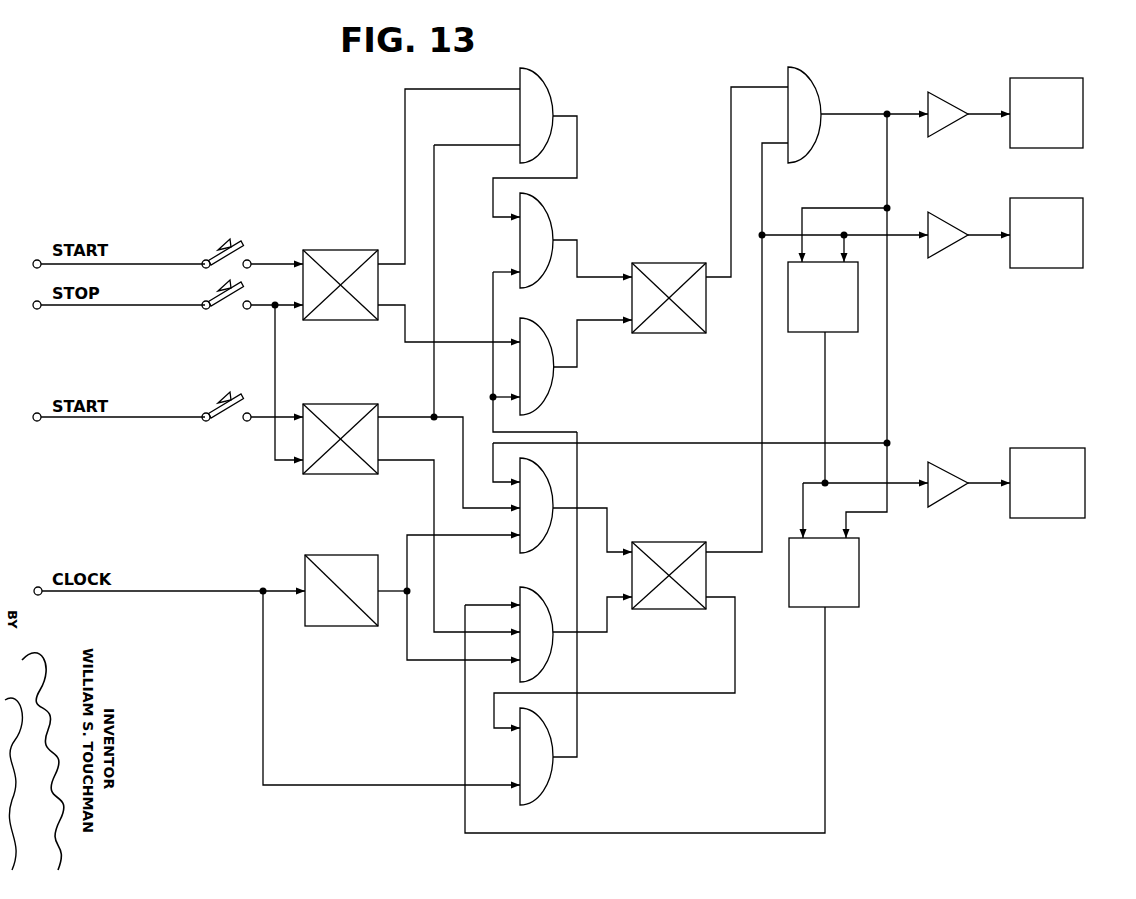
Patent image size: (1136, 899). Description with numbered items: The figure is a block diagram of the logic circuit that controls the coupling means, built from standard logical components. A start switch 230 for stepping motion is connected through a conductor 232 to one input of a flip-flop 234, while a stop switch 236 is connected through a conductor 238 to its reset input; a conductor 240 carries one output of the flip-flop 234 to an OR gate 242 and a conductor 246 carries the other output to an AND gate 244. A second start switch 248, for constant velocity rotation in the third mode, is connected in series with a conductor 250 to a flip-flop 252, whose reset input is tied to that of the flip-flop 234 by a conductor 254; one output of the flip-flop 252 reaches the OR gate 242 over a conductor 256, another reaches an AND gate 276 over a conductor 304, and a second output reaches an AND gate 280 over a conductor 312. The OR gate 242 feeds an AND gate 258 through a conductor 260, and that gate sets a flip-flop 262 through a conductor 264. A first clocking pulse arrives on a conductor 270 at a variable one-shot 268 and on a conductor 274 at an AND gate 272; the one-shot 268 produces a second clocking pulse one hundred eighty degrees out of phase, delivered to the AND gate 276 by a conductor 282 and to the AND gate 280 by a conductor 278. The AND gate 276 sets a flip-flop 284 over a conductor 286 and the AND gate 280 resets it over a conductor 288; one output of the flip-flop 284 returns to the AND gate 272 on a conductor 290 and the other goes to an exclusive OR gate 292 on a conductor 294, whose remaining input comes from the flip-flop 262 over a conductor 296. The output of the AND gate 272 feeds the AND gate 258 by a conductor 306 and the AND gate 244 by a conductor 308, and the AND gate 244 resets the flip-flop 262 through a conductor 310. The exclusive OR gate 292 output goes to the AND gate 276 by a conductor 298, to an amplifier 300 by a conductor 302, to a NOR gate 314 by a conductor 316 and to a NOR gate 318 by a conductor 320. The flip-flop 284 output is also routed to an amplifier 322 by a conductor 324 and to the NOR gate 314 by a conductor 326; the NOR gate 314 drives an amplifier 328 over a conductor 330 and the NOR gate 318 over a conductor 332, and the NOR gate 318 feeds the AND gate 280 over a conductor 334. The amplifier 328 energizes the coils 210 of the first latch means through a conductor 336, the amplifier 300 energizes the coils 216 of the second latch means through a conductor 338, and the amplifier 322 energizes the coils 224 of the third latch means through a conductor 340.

The coils of the first latch means 210 is at (1040, 448).
The coils of the second latch means 216 is at (1068, 78).
The coils of the third latch means 224 is at (1068, 198).
The start switch 230 is at (212, 256).
The conductor 232 is at (276, 262).
The flip-flop 234 is at (352, 250).
The stop switch 236 is at (214, 300).
The conductor 238 is at (260, 308).
The conductor 240 is at (404, 115).
The OR gate 242 is at (541, 95).
The AND gate 244 is at (545, 318).
The conductor 246 is at (401, 310).
The start switch 248 is at (213, 410).
The conductor 250 is at (258, 421).
The flip-flop 252 is at (340, 404).
The conductor 254 is at (275, 357).
The conductor 256 is at (433, 376).
The AND gate 258 is at (546, 225).
The conductor 260 is at (579, 146).
The flip-flop 262 is at (672, 263).
The conductor 264 is at (578, 262).
The variable one-shot 268 is at (340, 555).
The conductor 270 is at (187, 590).
The AND gate 272 is at (552, 766).
The conductor 274 is at (264, 632).
The AND gate 276 is at (553, 490).
The conductor 278 is at (407, 645).
The AND gate 280 is at (538, 590).
The conductor 282 is at (428, 533).
The flip-flop 284 is at (668, 542).
The conductor 286 is at (592, 508).
The conductor 288 is at (610, 597).
The conductor 290 is at (734, 560).
The exclusive OR gate 292 is at (812, 86).
The conductor 294 is at (736, 551).
The conductor 296 is at (750, 82).
The conductor 298 is at (886, 174).
The amplifier 300 is at (946, 96).
The conductor 302 is at (902, 96).
The conductor 304 is at (463, 483).
The conductor 306 is at (579, 714).
The conductor 308 is at (492, 395).
The conductor 310 is at (600, 323).
The conductor 312 is at (418, 460).
The NOR gate 314 is at (805, 335).
The conductor 316 is at (800, 220).
The NOR gate 318 is at (862, 565).
The conductor 320 is at (886, 382).
The amplifier 322 is at (946, 212).
The conductor 324 is at (903, 234).
The conductor 326 is at (840, 234).
The amplifier 328 is at (946, 462).
The conductor 330 is at (903, 481).
The conductor 332 is at (800, 500).
The conductor 334 is at (670, 833).
The conductor 336 is at (1000, 461).
The conductor 338 is at (980, 117).
The conductor 340 is at (998, 211).